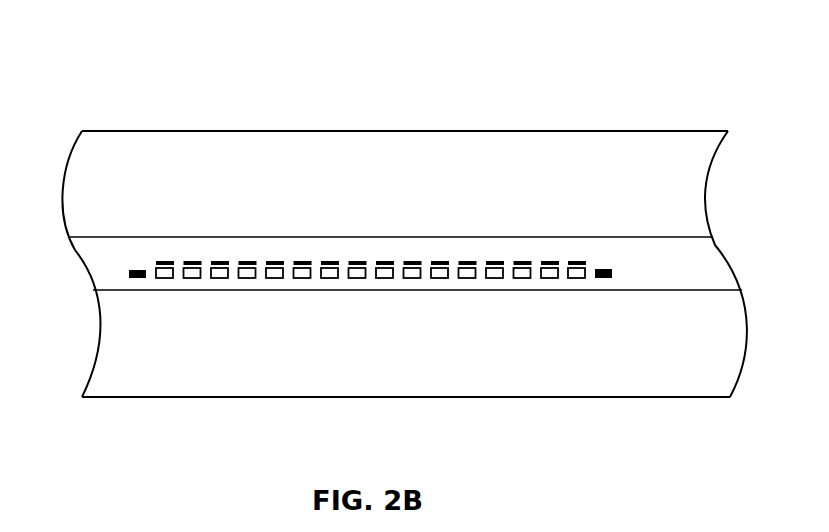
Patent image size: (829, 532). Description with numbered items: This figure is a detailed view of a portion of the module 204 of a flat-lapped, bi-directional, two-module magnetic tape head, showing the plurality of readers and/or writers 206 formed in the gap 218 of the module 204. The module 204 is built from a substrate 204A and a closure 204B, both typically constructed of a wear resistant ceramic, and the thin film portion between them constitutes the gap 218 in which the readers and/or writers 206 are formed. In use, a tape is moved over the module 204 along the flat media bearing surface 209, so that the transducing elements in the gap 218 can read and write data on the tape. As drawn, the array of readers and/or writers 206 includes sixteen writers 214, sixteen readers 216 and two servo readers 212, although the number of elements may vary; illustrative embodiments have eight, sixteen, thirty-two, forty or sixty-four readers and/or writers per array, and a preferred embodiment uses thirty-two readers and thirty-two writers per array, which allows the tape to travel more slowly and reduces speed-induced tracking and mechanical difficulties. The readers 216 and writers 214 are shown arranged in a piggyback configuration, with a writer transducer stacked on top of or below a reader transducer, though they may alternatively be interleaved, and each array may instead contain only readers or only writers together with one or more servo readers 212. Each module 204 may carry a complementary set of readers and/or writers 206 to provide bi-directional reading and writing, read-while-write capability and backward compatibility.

The module 204 is at (96, 100).
The substrate 204A is at (191, 131).
The closure 204B is at (245, 397).
The media bearing surface 209 is at (328, 200).
The writers 214 is at (523, 261).
The readers 216 is at (495, 279).
The servo readers 212 is at (129, 274).
The readers and/or writers 206 is at (640, 258).
The gap 218 is at (732, 262).